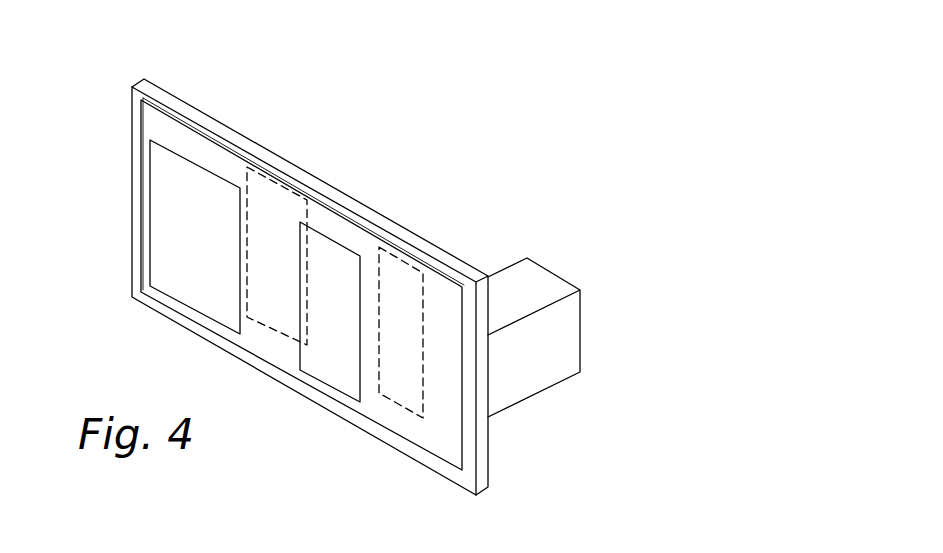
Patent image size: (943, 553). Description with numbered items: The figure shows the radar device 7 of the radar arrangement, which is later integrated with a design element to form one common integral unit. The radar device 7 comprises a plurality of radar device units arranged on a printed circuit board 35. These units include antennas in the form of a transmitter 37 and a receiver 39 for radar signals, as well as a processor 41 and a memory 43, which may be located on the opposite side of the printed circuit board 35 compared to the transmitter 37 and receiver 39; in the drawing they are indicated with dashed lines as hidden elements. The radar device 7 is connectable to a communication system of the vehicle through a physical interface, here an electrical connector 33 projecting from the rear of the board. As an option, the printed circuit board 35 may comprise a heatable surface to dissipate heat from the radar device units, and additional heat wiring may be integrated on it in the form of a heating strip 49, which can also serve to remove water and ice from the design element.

The radar device 7 is at (507, 167).
The electrical connector 33 is at (543, 340).
The printed circuit board 35 is at (167, 100).
The transmitter 37 is at (323, 363).
The receiver 39 is at (165, 247).
The processor 41 is at (402, 277).
The memory 43 is at (274, 198).
The heating strip 49 is at (141, 107).